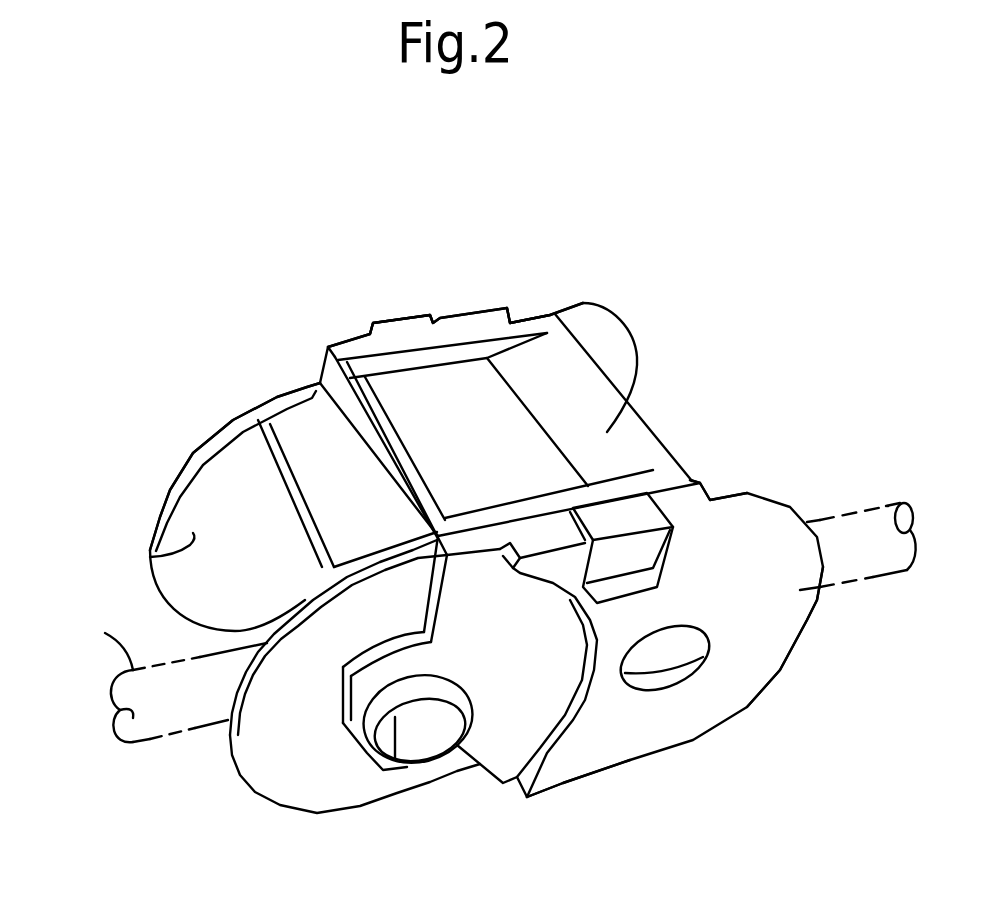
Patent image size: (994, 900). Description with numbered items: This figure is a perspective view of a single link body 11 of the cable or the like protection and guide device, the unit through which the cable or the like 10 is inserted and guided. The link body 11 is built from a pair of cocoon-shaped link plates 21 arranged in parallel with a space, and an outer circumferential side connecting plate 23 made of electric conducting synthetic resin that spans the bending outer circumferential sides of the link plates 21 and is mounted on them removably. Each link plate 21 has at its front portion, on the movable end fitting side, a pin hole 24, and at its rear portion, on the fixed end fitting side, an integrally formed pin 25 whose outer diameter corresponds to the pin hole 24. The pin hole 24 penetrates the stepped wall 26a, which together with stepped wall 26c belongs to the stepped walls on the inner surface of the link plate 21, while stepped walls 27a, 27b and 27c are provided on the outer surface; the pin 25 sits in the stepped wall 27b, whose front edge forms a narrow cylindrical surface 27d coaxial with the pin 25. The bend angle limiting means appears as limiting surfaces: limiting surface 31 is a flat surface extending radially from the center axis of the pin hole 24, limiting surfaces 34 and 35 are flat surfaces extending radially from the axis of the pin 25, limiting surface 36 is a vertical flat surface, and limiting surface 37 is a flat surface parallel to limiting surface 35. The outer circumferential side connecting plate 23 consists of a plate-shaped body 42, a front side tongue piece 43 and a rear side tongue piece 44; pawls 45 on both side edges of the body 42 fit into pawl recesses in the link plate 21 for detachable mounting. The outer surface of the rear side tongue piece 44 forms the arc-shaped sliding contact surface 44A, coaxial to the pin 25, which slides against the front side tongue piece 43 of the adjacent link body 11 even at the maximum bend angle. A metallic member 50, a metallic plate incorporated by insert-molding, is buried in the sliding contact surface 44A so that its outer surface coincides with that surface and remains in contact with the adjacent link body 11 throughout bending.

The cable or the like 10 is at (105, 633).
The link body 11 is at (613, 303).
The link plate 21 is at (527, 305).
The outer circumferential side connecting plate 23 is at (660, 432).
The pin hole 24 is at (670, 648).
The pin 25 is at (420, 745).
The stepped wall 26a is at (622, 343).
The stepped wall 26c is at (150, 557).
The stepped wall 27a is at (670, 720).
The stepped wall 27b is at (497, 727).
The stepped wall 27c is at (192, 460).
The narrow cylindrical surface 27d is at (560, 745).
The limiting surface 31 is at (560, 315).
The limiting surface 34 is at (387, 607).
The limiting surface 35 is at (490, 770).
The limiting surface 36 is at (347, 703).
The limiting surface 37 is at (367, 750).
The body 42 is at (437, 387).
The front side tongue piece 43 is at (607, 430).
The rear side tongue piece 44 is at (297, 427).
The sliding contact surface 44A is at (293, 488).
The pawl 45 is at (473, 320).
The metallic member 50 is at (280, 402).